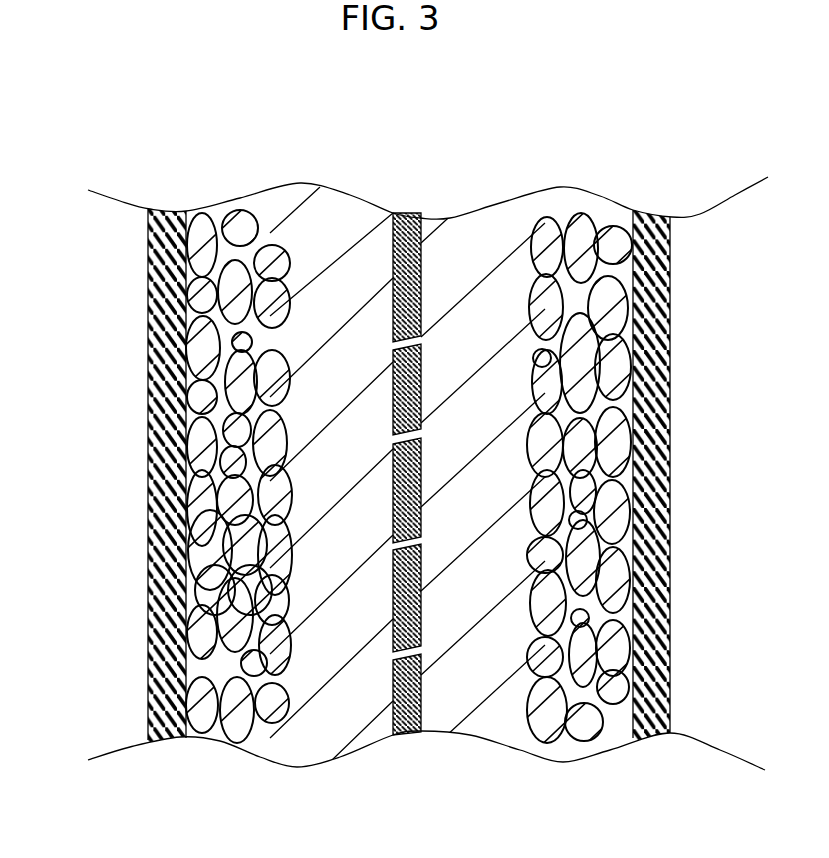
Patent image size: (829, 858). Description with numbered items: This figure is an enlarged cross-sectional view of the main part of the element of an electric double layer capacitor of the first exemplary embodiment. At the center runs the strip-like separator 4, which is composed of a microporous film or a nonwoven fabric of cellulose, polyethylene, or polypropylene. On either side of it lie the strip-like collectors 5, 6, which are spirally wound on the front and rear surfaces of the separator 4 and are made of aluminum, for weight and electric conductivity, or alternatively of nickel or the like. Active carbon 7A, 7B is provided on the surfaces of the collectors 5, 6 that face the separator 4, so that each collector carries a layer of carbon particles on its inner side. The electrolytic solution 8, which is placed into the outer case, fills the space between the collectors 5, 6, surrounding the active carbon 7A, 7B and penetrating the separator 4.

The separator 4 is at (422, 216).
The collector 5 is at (148, 293).
The collector 6 is at (665, 678).
The active carbon 7A is at (235, 218).
The active carbon 7B is at (588, 218).
The electrolytic solution 8 is at (497, 722).